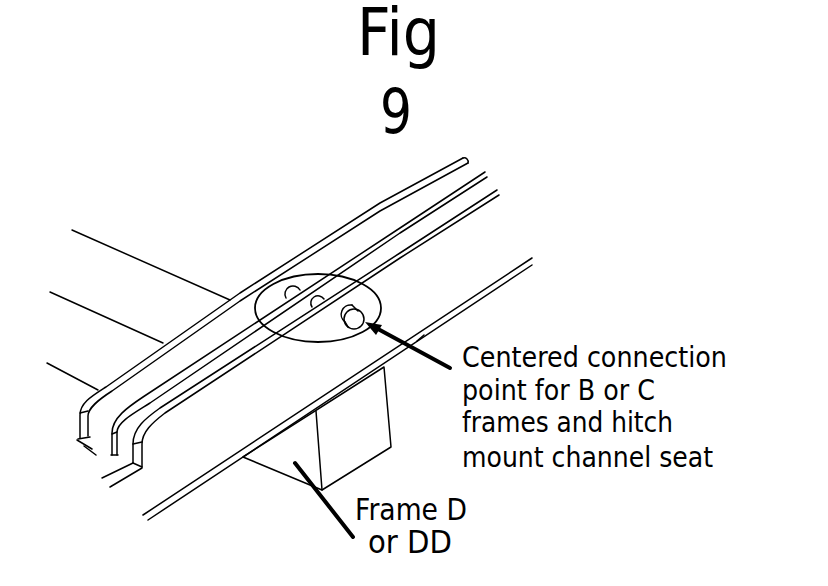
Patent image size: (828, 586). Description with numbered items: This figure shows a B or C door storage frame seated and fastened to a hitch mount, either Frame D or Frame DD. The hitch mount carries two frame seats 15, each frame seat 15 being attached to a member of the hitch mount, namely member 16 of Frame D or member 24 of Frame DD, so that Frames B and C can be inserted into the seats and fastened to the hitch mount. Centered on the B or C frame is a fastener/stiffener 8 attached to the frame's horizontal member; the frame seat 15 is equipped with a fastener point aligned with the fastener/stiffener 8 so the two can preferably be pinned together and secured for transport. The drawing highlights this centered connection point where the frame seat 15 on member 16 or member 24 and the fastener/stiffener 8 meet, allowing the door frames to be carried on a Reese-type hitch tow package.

The fastener/stiffener 8 is at (347, 244).
The frame seat 15 is at (473, 298).
The frame member of Frame DD 24 is at (107, 293).
The frame member of Frame D 16 is at (138, 310).